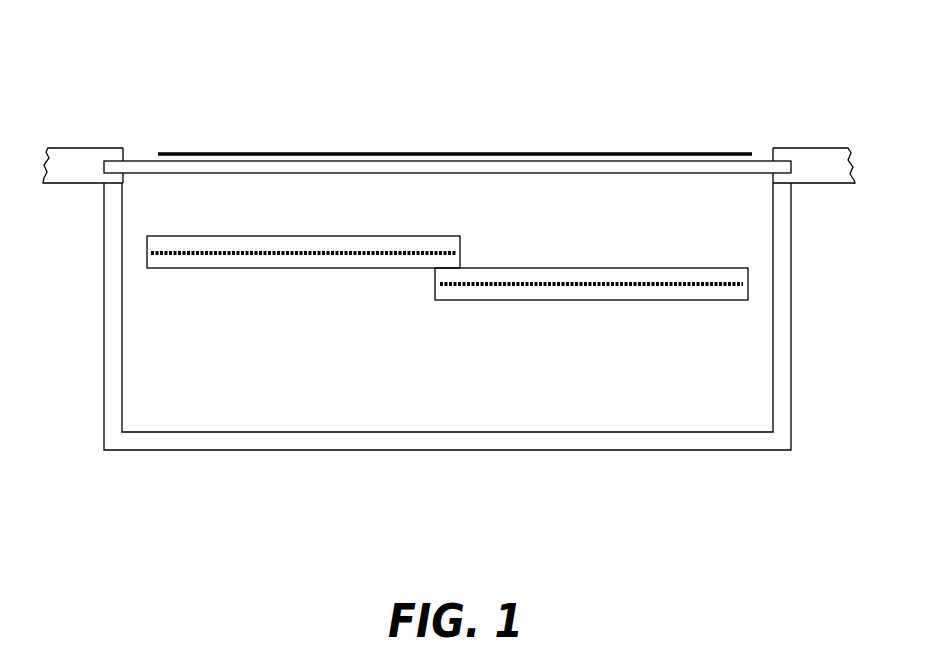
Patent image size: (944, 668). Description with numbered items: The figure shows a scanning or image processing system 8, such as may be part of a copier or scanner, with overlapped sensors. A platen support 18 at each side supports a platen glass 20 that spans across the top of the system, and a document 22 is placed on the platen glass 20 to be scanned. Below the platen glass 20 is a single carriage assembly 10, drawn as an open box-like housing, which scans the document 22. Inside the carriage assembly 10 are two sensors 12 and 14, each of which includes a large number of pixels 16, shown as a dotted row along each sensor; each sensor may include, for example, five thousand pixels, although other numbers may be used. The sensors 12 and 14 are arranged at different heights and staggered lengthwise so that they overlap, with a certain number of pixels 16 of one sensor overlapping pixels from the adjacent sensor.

The apparatus 8 is at (393, 98).
The single carriage assembly 10 is at (432, 444).
The sensor 12 is at (683, 292).
The sensor 14 is at (150, 263).
The pixels 16 is at (603, 283).
The platen support 18 is at (77, 157).
The platen glass 20 is at (760, 162).
The document 22 is at (625, 152).